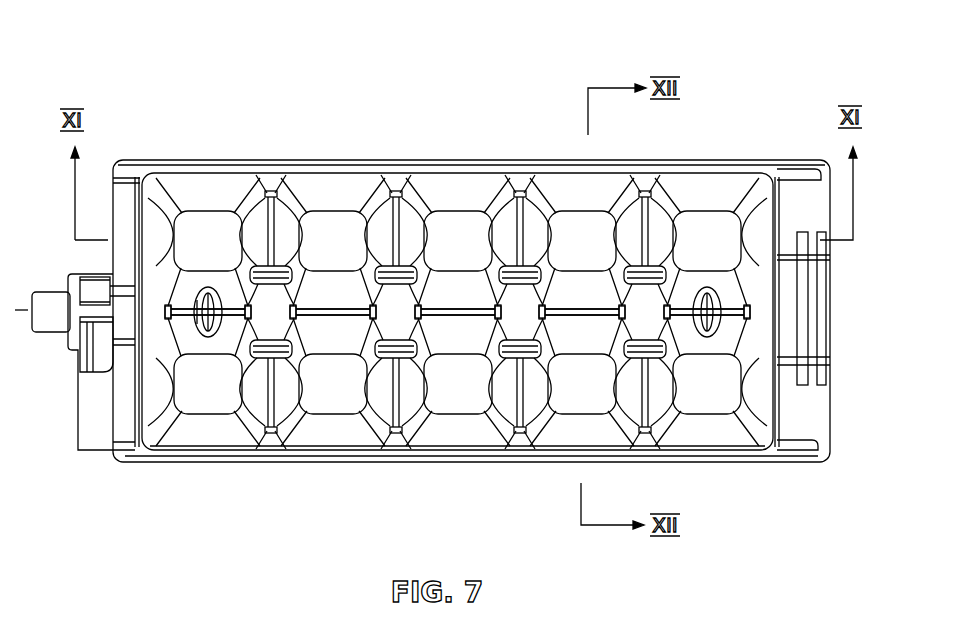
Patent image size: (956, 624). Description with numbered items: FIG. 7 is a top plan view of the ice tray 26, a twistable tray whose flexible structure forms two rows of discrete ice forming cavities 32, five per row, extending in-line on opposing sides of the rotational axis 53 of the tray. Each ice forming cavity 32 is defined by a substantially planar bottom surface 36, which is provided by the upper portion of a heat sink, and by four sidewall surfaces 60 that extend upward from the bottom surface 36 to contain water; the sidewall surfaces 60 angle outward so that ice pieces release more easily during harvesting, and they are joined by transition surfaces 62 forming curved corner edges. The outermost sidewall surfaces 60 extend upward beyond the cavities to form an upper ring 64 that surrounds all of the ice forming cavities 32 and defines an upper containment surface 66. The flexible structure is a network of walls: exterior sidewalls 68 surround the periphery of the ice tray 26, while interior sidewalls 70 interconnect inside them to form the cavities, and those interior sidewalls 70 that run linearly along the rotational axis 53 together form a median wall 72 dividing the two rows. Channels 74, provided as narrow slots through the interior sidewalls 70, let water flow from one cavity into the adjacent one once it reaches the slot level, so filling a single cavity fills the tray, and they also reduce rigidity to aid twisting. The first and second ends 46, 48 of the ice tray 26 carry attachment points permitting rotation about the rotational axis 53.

The ice tray 26 is at (213, 72).
The ice forming cavities 32 is at (232, 172).
The bottom surface 36 is at (315, 225).
The first end 46 is at (842, 386).
The second end 48 is at (64, 380).
The rotational axis 53 is at (15, 312).
The sidewall surfaces 60 is at (260, 237).
The transition surfaces 62 is at (745, 198).
The upper ring 64 is at (400, 455).
The upper containment surface 66 is at (440, 185).
The exterior sidewalls 68 is at (250, 430).
The interior sidewalls 70 is at (432, 225).
The median wall 72 is at (183, 330).
The channels 74 is at (632, 265).